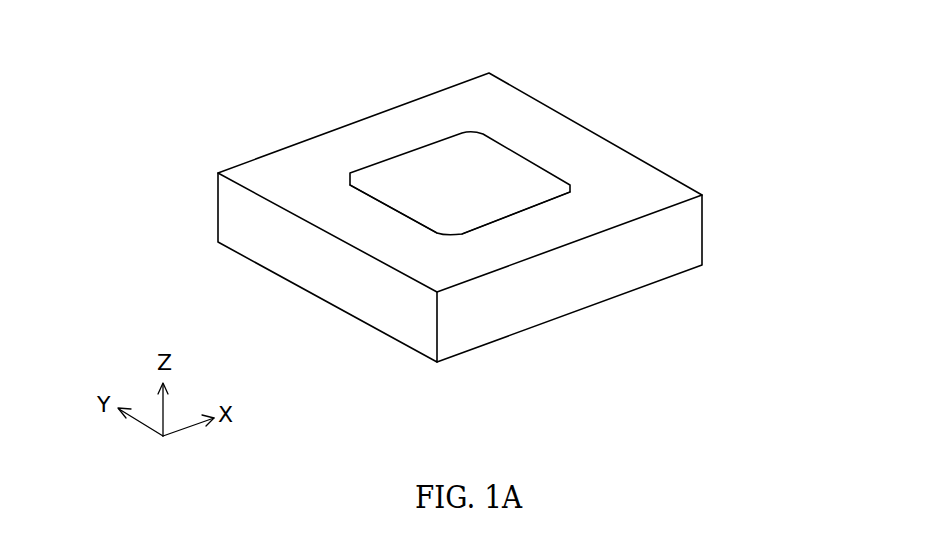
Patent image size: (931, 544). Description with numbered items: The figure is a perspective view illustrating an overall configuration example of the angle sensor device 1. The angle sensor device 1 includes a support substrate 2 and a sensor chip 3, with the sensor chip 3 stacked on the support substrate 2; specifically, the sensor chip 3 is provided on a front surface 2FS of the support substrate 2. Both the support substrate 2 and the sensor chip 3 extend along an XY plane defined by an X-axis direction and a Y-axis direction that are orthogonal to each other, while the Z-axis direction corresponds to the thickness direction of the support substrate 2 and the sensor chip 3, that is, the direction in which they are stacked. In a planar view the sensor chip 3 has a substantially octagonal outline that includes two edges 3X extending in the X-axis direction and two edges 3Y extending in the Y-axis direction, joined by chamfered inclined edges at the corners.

The angle sensor device 1 is at (495, 199).
The support substrate 2 is at (495, 217).
The front surface 2FS is at (643, 188).
The sensor chip 3 is at (438, 155).
The edge 3X is at (490, 228).
The edge 3Y is at (393, 210).